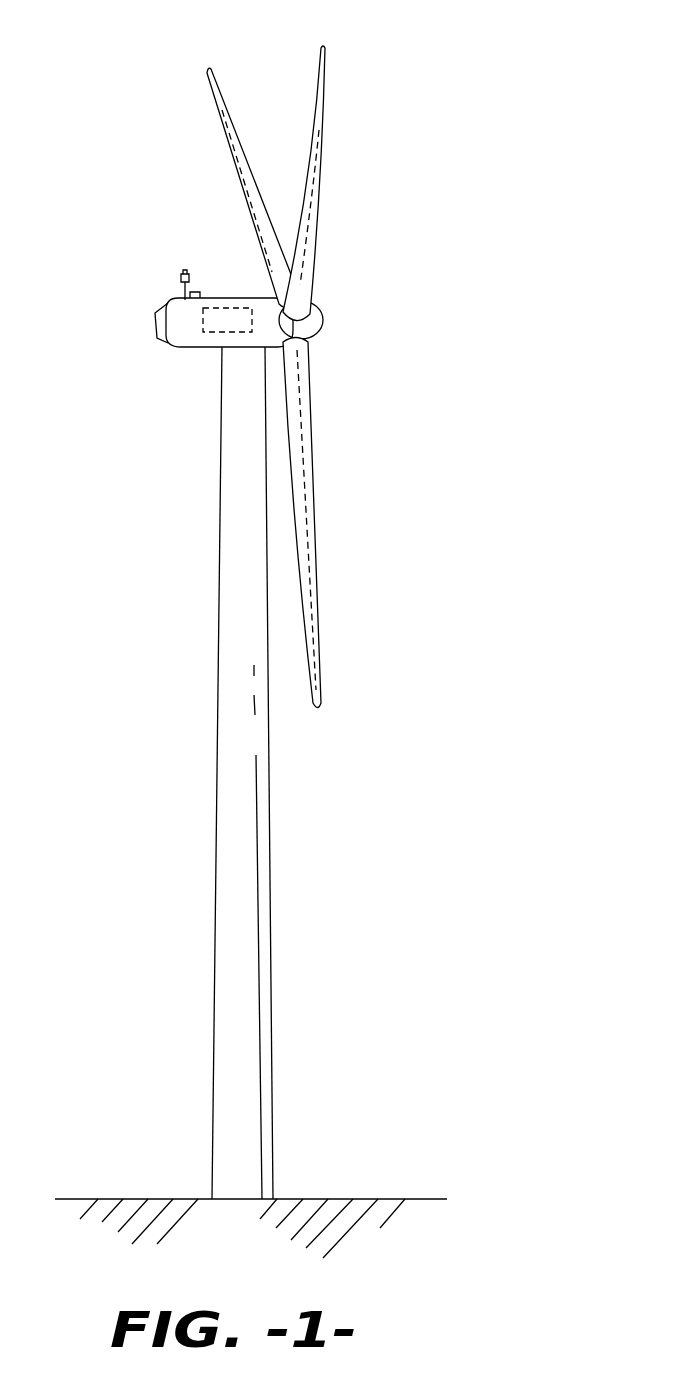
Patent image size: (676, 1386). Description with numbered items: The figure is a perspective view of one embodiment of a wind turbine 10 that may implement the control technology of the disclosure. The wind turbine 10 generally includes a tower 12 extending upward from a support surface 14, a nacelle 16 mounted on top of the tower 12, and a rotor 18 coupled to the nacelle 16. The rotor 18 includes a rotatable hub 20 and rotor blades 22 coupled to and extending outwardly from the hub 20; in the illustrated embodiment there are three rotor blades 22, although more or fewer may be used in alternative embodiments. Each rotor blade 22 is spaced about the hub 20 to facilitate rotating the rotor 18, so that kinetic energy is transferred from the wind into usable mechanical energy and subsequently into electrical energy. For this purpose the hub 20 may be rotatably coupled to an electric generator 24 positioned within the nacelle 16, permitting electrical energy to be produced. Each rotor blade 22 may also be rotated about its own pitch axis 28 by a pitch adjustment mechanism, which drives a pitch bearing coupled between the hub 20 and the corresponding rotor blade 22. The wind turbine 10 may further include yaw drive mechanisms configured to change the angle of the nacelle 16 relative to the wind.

The wind turbine 10 is at (423, 135).
The tower 12 is at (228, 890).
The support surface 14 is at (137, 1199).
The nacelle 16 is at (201, 348).
The rotor 18 is at (322, 297).
The rotatable hub 20 is at (322, 326).
The rotor blade 22 is at (313, 92).
The electric generator 24 is at (230, 306).
The pitch axis 28 is at (257, 223).